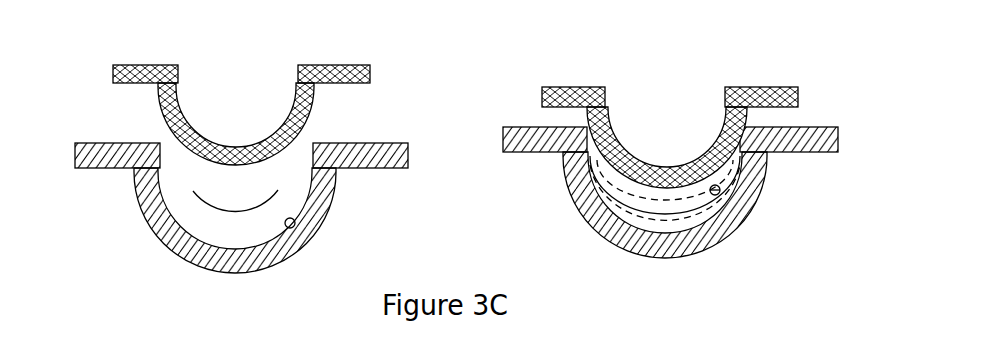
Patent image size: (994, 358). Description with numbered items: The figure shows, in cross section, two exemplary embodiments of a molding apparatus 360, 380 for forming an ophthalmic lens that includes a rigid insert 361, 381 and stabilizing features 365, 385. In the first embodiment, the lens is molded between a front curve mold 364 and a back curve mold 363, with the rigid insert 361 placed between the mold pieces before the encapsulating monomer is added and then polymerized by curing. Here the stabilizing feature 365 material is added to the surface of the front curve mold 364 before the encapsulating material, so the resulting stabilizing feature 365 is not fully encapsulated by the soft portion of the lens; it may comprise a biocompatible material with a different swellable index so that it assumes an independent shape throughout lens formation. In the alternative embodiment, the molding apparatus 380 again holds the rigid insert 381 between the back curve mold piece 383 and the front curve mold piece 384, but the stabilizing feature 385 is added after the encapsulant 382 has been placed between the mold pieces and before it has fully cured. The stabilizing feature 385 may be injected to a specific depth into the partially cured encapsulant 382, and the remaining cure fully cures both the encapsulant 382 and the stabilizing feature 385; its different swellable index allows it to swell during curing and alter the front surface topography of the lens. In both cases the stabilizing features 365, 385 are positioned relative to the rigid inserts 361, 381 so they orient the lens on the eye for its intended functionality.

The molding apparatus 360 is at (222, 169).
The rigid insert 361 is at (210, 204).
The back curve mold 363 is at (113, 72).
The front curve mold 364 is at (75, 148).
The stabilizing feature 365 is at (291, 229).
The molding apparatus 380 is at (671, 183).
The rigid insert 381 is at (643, 218).
The encapsulant 382 is at (603, 184).
The back curve mold piece 383 is at (798, 93).
The front curve mold piece 384 is at (815, 153).
The stabilizing feature 385 is at (717, 196).